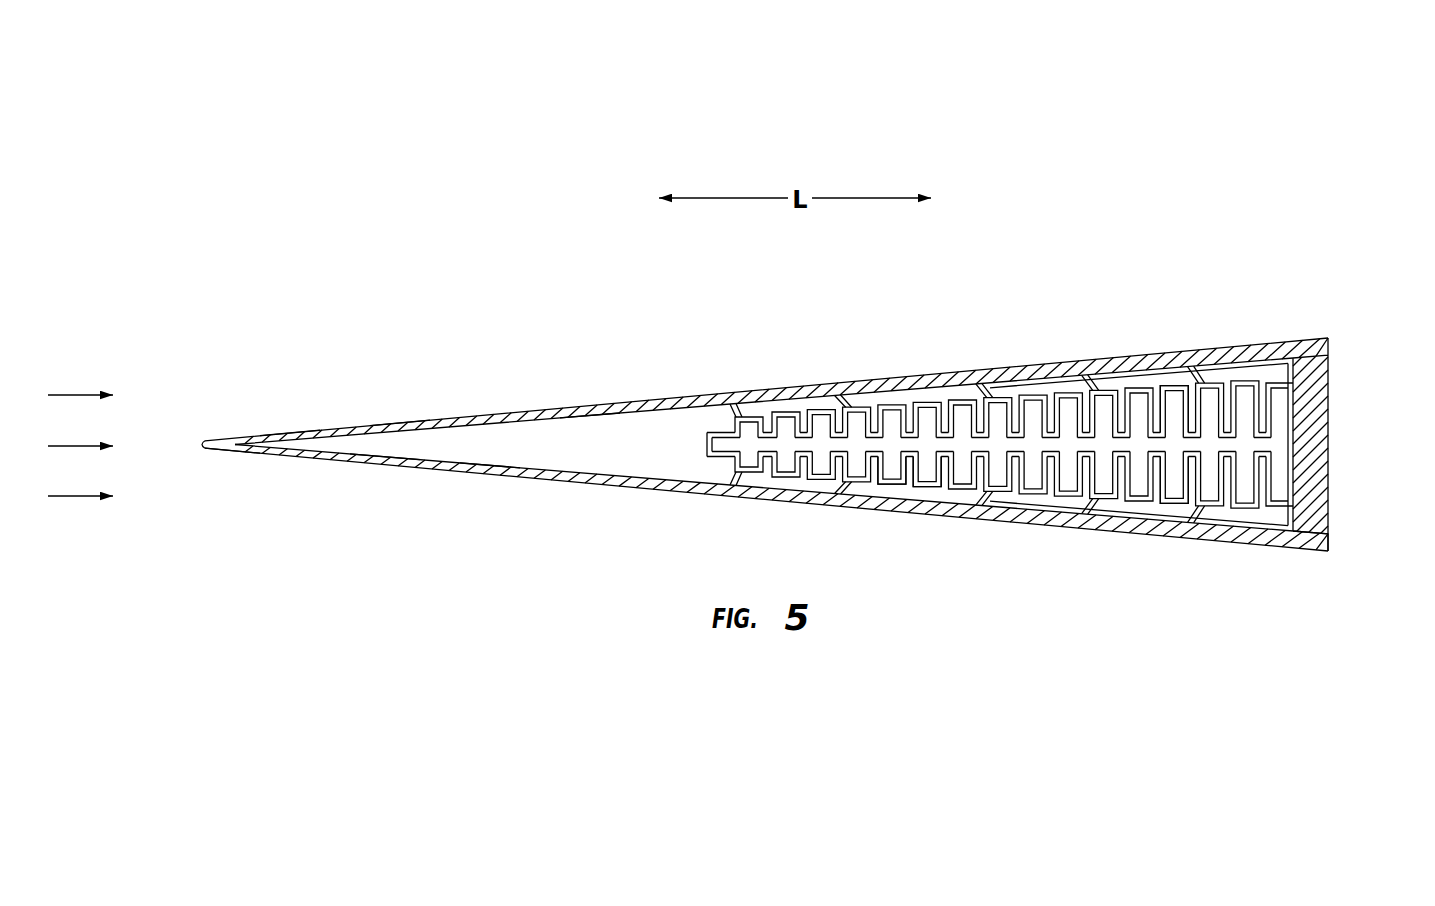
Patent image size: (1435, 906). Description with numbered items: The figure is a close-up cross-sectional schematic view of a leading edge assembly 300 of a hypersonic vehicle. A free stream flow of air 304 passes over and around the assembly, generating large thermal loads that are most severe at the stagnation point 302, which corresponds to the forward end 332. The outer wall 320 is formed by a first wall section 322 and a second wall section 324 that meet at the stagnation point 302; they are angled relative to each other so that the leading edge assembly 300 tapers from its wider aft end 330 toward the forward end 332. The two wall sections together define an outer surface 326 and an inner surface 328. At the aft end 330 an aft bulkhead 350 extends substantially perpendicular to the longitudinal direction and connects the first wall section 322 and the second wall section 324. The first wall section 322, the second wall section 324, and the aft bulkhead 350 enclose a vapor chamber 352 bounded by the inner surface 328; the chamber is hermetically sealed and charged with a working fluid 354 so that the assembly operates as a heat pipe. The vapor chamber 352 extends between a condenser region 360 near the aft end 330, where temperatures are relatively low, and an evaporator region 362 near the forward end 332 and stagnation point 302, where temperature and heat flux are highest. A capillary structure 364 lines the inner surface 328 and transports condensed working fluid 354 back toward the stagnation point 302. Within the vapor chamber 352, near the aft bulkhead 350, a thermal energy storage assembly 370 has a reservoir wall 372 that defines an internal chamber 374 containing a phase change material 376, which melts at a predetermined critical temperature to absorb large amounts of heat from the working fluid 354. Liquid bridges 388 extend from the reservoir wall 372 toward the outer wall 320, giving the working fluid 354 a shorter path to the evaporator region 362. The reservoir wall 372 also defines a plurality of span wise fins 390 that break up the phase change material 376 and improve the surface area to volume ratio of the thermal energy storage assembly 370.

The leading edge assembly 300 is at (424, 258).
The stagnation point 302 is at (187, 442).
The free stream flow of air 304 is at (73, 497).
The outer wall 320 is at (616, 398).
The first wall section 322 is at (536, 406).
The second wall section 324 is at (560, 483).
The outer surface 326 is at (397, 420).
The inner surface 328 is at (381, 442).
The aft end 330 is at (1314, 564).
The forward end 332 is at (220, 478).
The aft bulkhead 350 is at (1330, 512).
The vapor chamber 352 is at (619, 460).
The working fluid 354 is at (487, 455).
The condenser region 360 is at (1257, 360).
The evaporator region 362 is at (288, 438).
The capillary structure 364 is at (584, 430).
The thermal energy storage assembly 370 is at (1033, 382).
The reservoir wall 372 is at (1176, 391).
The internal chamber 374 is at (1177, 460).
The phase change material 376 is at (1280, 446).
The liquid bridges 388 is at (848, 402).
The span wise fins 390 is at (927, 470).